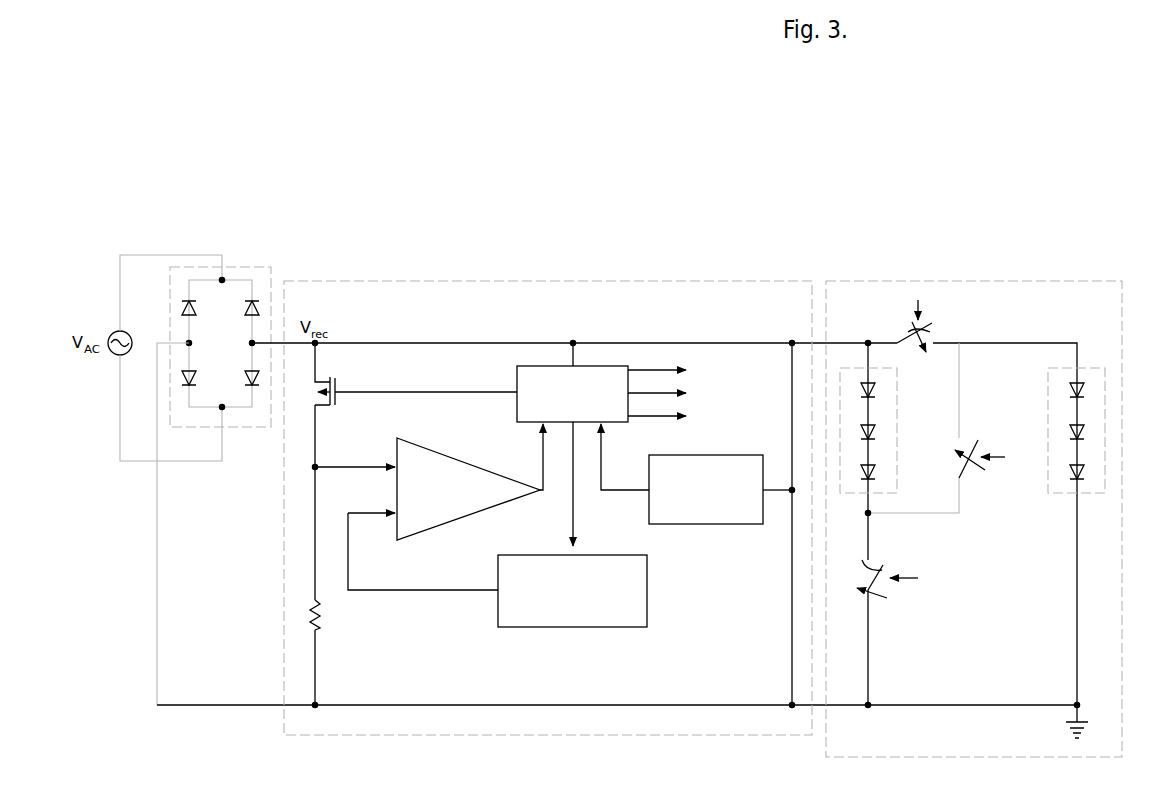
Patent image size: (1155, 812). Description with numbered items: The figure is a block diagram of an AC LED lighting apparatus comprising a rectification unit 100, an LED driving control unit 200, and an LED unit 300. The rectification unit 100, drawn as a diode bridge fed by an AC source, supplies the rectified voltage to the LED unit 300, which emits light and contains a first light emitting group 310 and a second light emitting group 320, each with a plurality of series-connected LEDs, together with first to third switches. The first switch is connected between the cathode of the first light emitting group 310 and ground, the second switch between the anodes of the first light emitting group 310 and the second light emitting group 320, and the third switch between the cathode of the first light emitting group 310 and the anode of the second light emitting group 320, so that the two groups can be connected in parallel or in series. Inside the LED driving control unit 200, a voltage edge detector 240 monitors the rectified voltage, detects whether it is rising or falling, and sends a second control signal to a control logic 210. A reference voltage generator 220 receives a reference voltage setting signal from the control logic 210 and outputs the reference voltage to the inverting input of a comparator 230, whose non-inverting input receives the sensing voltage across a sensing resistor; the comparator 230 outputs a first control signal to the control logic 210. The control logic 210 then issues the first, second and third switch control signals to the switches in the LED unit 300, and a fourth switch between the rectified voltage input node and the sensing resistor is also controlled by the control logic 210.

The rectification unit 100 is at (243, 267).
The LED driving control unit 200 is at (548, 281).
The control logic 210 is at (517, 376).
The reference voltage generator 220 is at (647, 590).
The comparator 230 is at (436, 533).
The voltage edge detector 240 is at (732, 455).
The LED unit 300 is at (964, 281).
The first light emitting group 310 is at (897, 397).
The second light emitting group 320 is at (1061, 493).